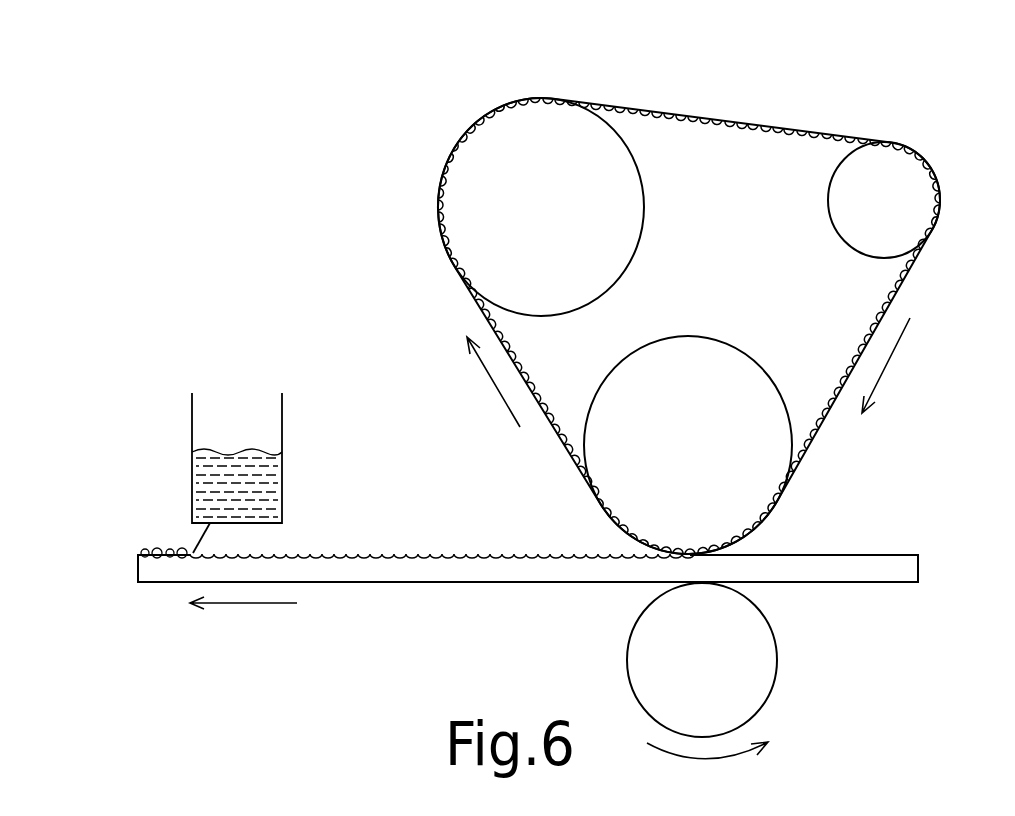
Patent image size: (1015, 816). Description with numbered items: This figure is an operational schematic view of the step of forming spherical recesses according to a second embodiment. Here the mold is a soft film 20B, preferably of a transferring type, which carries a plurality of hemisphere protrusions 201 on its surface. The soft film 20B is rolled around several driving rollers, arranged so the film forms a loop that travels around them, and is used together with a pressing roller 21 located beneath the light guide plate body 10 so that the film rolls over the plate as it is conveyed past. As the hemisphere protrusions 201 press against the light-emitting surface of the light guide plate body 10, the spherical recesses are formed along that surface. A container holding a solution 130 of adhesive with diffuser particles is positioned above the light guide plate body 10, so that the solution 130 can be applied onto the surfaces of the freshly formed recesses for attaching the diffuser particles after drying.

The light guide plate body 10 is at (442, 576).
The soft film 20B is at (713, 133).
The hemisphere protrusions 201 is at (735, 118).
The pressing roller 21 is at (777, 661).
The solution 130 is at (202, 487).